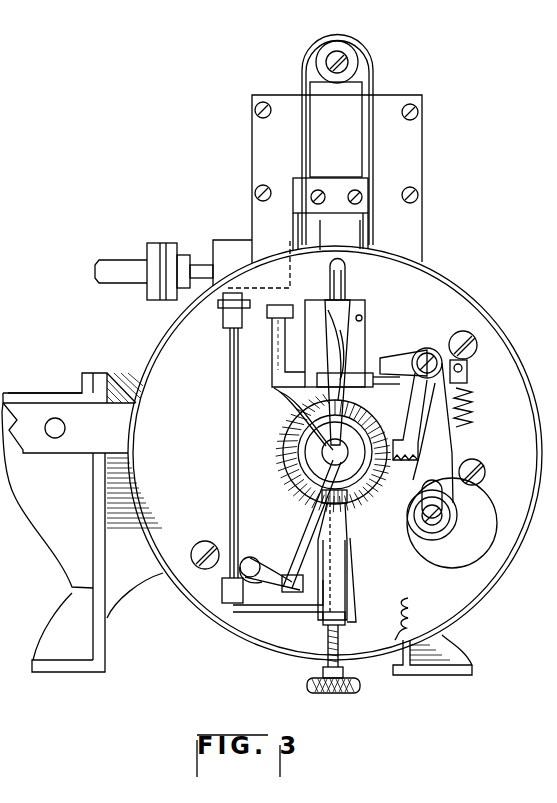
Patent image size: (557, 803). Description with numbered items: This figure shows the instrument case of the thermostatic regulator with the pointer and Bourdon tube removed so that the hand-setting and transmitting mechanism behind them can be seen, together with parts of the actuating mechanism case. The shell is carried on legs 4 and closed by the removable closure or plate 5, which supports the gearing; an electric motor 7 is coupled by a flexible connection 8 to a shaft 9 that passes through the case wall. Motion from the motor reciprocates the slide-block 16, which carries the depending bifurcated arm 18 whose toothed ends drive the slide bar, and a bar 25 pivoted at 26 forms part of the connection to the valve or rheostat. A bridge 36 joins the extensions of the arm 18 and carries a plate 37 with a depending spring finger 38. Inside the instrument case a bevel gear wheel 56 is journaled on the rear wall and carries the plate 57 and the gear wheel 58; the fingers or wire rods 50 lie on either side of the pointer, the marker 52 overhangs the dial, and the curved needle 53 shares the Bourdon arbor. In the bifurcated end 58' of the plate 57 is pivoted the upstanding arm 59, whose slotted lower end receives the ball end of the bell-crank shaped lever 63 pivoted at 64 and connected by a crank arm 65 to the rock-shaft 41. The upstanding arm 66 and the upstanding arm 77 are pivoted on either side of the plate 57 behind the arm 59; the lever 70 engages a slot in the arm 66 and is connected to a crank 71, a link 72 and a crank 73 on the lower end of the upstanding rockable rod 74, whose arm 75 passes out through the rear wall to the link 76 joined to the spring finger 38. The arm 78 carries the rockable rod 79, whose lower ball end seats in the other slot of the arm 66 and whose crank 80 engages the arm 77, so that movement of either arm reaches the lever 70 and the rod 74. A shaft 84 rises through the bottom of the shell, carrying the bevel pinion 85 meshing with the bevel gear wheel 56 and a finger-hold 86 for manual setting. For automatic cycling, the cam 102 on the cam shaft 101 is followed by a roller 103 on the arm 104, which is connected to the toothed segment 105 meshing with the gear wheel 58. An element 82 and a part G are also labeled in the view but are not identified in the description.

The legs 4 is at (100, 652).
The closure or plate 5 is at (258, 148).
The electric motor 7 is at (452, 280).
The flexible connection 8 is at (160, 243).
The shaft 9 is at (200, 265).
The slide-block 16 is at (305, 42).
The bifurcated arm 18 is at (310, 78).
The bar 25 is at (13, 399).
The pivot 26 is at (50, 429).
The bridge 36 is at (323, 178).
The plate 37 is at (360, 189).
The spring finger 38 is at (297, 229).
The rock-shaft 41 is at (250, 557).
The fingers or wire rods 50 is at (368, 368).
The marker 52 is at (343, 262).
The curved needle 53 is at (345, 286).
The bevel gear wheel 56 is at (290, 467).
The plate 57 is at (300, 405).
The gear wheel 58 is at (308, 452).
The bifurcated end 58' is at (323, 378).
The upstanding arm 59 is at (347, 327).
The bell-crank shaped lever 63 is at (306, 528).
The pivot 64 is at (285, 590).
The crank arm 65 is at (286, 576).
The upstanding arm 66 is at (361, 317).
The lever 70 is at (353, 566).
The crank 71 is at (321, 623).
The link 72 is at (252, 612).
The crank 73 is at (225, 603).
The rockable rod 74 is at (229, 408).
The arm 75 is at (222, 320).
The link 76 is at (268, 283).
The upstanding arm 77 is at (318, 296).
The upstanding arm 78 is at (276, 345).
The rockable rod 79 is at (303, 432).
The crank 80 is at (292, 312).
The guide 82 is at (346, 301).
The shaft 84 is at (340, 642).
The bevel pinion 85 is at (348, 500).
The finger-hold 86 is at (307, 688).
The cam shaft 101 is at (430, 517).
The cam 102 is at (486, 503).
The roller 103 is at (481, 467).
The arm 104 is at (466, 385).
The toothed segment 105 is at (406, 408).
The base G is at (40, 393).